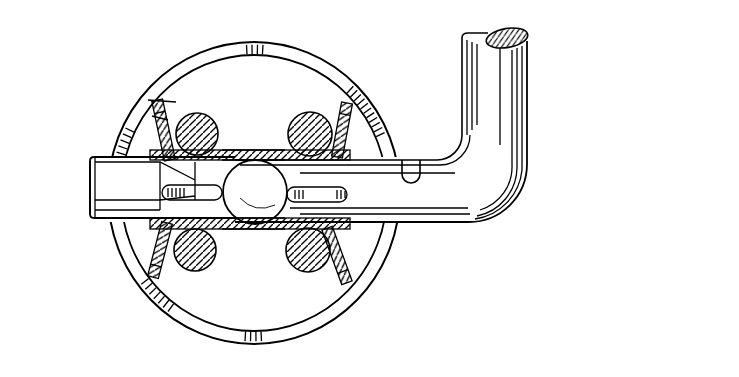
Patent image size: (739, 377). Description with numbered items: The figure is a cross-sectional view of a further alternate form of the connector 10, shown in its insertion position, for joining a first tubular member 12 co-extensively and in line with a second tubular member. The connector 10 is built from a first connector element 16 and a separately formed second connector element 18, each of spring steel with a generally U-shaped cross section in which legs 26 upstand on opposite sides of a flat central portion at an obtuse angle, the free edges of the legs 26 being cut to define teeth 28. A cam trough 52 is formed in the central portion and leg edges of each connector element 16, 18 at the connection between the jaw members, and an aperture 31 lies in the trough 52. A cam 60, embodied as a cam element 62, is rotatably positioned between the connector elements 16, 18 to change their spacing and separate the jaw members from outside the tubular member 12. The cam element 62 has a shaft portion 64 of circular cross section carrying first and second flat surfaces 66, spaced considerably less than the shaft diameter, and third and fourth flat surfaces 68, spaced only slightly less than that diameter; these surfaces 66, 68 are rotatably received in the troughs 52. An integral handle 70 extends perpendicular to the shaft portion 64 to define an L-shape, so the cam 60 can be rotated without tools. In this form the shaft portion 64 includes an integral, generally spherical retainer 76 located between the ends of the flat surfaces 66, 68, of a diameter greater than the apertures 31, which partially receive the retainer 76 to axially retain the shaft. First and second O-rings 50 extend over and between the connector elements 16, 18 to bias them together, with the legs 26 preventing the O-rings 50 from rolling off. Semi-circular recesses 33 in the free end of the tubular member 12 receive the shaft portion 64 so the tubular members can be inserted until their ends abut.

The connector 10 is at (301, 99).
The first tubular member 12 is at (182, 52).
The first connector element 16 is at (359, 84).
The second connector element 18 is at (138, 277).
The legs 26 is at (150, 126).
The teeth 28 is at (157, 150).
The aperture 31 is at (259, 160).
The semi-circular recesses 33 is at (416, 172).
The O-rings 50 is at (197, 113).
The cam trough 52 is at (280, 150).
The cam 60 is at (273, 198).
The cam element 62 is at (358, 159).
The shaft portion 64 is at (97, 221).
The first and second flat surfaces 66 is at (147, 149).
The third and fourth flat surfaces 68 is at (170, 177).
The handle 70 is at (528, 121).
The retainer 76 is at (270, 206).